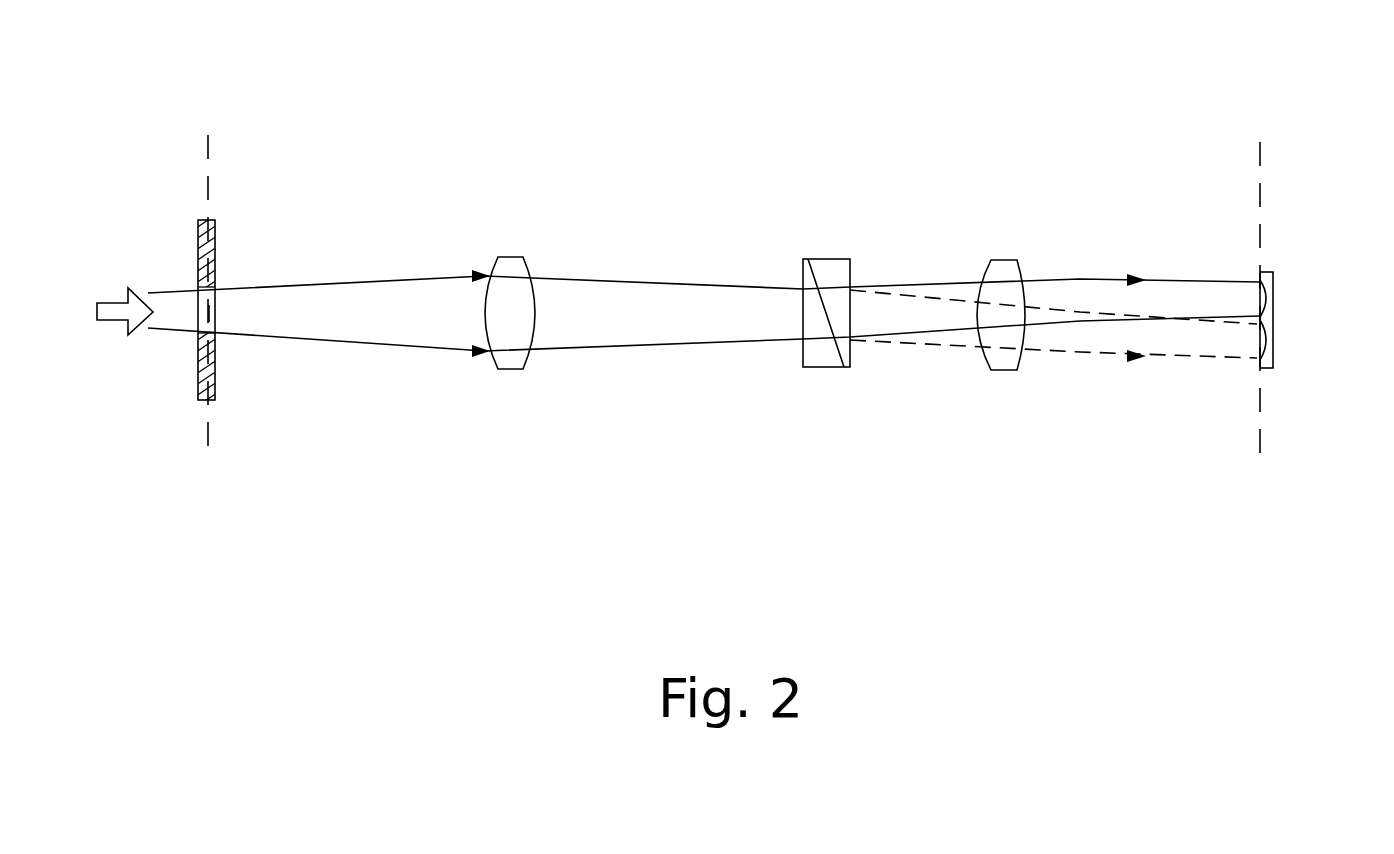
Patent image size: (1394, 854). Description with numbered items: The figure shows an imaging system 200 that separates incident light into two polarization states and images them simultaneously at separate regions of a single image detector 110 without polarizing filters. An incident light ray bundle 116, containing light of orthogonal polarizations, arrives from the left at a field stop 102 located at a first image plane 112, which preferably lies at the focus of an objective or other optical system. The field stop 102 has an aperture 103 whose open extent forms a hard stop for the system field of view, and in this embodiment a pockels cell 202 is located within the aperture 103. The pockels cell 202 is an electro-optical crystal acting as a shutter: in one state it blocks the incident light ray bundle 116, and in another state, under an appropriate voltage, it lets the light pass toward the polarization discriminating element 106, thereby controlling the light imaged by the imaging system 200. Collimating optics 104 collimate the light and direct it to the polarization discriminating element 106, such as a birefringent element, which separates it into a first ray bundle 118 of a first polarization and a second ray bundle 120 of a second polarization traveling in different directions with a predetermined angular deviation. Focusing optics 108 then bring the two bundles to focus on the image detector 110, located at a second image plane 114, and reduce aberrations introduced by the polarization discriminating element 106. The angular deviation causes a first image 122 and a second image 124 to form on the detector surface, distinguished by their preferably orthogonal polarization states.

The imaging system 200 is at (795, 138).
The first image plane 112 is at (208, 150).
The incident light ray bundle 116 is at (118, 300).
The field stop 102 is at (215, 247).
The pockels cell 202 is at (200, 320).
The aperture 103 is at (232, 317).
The collimating optics 104 is at (515, 256).
The polarization discriminating element 106 is at (827, 258).
The focusing optics 108 is at (1007, 260).
The first ray bundle 118 is at (921, 282).
The second ray bundle 120 is at (928, 348).
The second image plane 114 is at (1260, 183).
The image detector 110 is at (1273, 273).
The first image 122 is at (1273, 297).
The second image 124 is at (1273, 338).